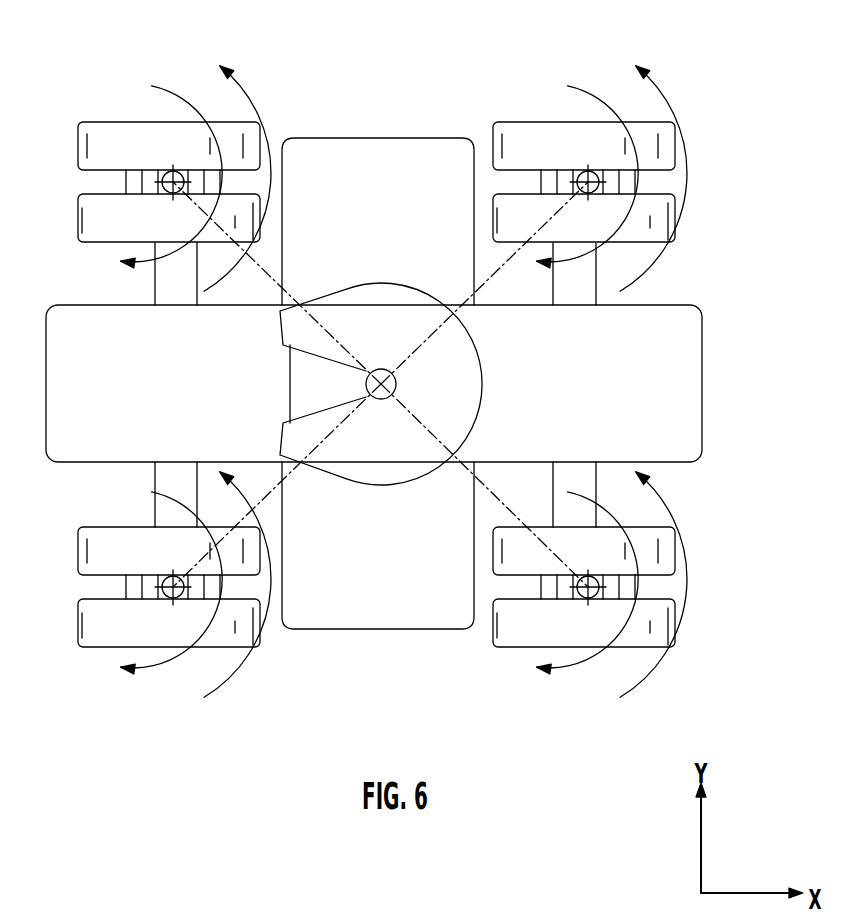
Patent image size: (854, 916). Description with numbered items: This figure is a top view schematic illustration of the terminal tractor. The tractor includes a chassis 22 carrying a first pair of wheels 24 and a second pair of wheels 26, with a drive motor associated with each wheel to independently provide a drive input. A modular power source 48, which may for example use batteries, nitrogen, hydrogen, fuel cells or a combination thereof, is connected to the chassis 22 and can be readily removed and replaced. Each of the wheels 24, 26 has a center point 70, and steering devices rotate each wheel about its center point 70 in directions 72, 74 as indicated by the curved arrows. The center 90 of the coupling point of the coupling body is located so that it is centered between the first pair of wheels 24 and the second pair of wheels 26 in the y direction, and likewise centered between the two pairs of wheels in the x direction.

The chassis 22 is at (702, 412).
The first pair of wheels 24 is at (78, 134).
The second pair of wheels 26 is at (340, 288).
The power source 48 is at (342, 630).
The center point 70 is at (171, 180).
The direction 72 is at (258, 107).
The direction 74 is at (181, 92).
The center 90 is at (382, 370).